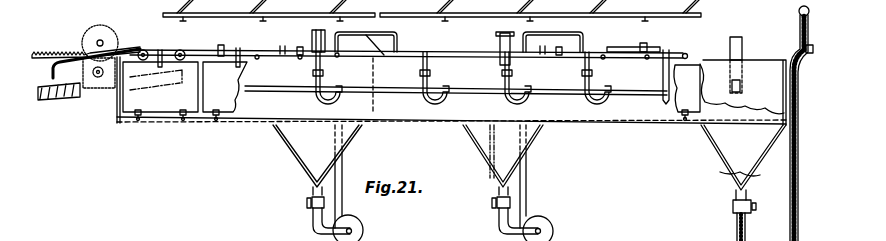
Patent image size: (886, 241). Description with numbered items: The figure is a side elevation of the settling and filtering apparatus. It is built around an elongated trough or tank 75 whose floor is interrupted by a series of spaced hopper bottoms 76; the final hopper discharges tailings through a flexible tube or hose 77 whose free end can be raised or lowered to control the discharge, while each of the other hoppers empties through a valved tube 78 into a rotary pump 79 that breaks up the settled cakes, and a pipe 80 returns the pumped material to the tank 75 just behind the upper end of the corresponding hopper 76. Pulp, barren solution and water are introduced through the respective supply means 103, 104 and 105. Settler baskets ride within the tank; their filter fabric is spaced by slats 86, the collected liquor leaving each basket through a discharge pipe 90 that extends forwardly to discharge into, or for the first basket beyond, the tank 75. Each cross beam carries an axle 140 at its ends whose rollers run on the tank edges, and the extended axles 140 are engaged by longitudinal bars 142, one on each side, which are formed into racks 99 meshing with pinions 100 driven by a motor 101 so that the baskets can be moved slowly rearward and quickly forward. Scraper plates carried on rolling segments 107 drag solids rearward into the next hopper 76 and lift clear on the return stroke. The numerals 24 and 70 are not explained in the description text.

The section line arrow 24 is at (446, 41).
The overhead supporting rail 70 is at (464, 10).
The elongated trough or tank 75 is at (645, 110).
The hopper bottom 76 is at (737, 150).
The flexible tube or hose 77 is at (775, 123).
The valved tube 78 is at (499, 222).
The rotary pump 79 is at (553, 236).
The pipe 80 is at (362, 202).
The strips or slats 86 is at (378, 55).
The discharge pipe 90 is at (96, 65).
The rack 99 is at (86, 43).
The pinion 100 is at (73, 0).
The motor 101 is at (107, 82).
The pulp supply means 103 is at (326, 52).
The barren solution supply means 104 is at (499, 45).
The water supply means 105 is at (740, 34).
The segments 107 is at (140, 121).
The axle 140 is at (440, 56).
The longitudinal bars 142 is at (533, 56).